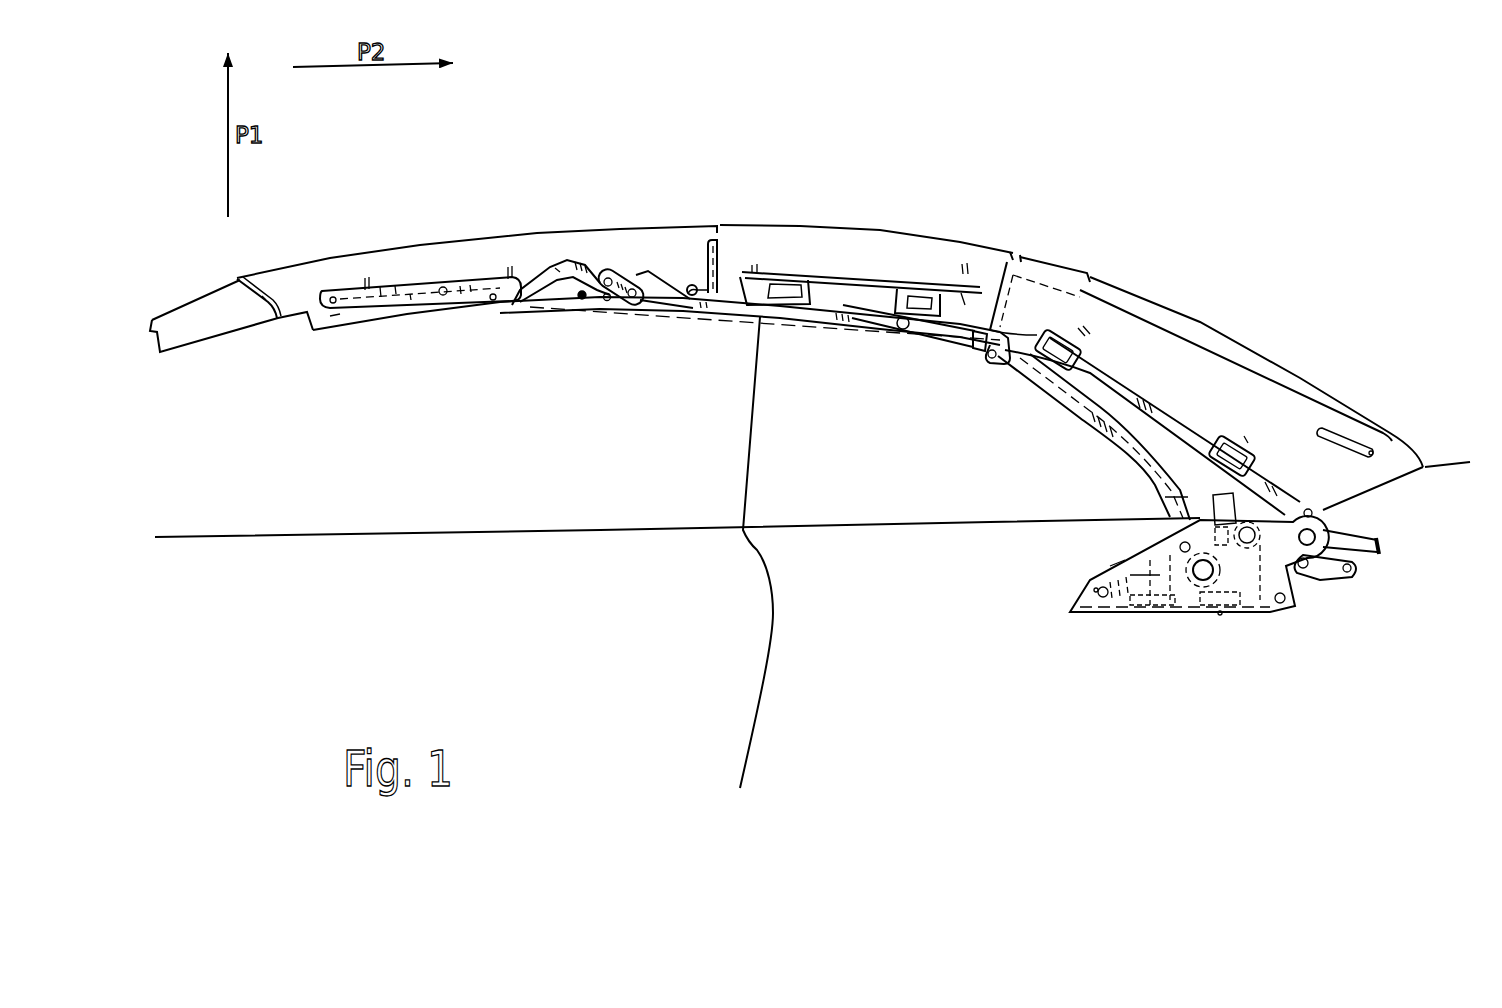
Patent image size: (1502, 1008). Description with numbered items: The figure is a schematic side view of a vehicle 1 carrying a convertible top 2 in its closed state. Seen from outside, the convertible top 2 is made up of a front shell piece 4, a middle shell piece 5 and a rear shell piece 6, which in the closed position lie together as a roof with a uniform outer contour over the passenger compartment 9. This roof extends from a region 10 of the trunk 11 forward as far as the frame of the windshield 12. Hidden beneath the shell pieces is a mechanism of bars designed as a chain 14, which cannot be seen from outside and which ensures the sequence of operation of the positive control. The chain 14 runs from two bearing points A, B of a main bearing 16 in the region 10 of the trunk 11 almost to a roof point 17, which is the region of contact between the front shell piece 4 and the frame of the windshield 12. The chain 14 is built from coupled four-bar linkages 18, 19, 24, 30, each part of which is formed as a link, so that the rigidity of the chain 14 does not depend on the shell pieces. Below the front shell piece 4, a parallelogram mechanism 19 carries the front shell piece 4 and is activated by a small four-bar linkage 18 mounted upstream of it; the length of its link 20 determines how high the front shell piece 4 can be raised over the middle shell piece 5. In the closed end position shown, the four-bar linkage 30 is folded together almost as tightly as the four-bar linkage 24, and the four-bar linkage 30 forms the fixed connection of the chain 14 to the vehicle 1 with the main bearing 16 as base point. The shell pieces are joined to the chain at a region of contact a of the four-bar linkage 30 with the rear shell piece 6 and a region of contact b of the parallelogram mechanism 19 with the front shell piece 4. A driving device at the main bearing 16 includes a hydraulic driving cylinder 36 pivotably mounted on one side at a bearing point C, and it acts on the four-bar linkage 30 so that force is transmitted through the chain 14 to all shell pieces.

The vehicle 1 is at (1223, 180).
The convertible top 2 is at (467, 177).
The front shell piece 4 is at (560, 243).
The middle shell piece 5 is at (837, 247).
The rear shell piece 6 is at (1043, 300).
The passenger compartment 9 is at (647, 489).
The region of the trunk 10 is at (1473, 433).
The trunk 11 is at (1465, 601).
The windshield 12 is at (195, 310).
The chain 14 is at (643, 333).
The main bearing 16 is at (1103, 628).
The roof point 17 is at (268, 318).
The small four-bar linkage 18 is at (620, 263).
The parallelogram mechanism 19 is at (438, 320).
The link 20 is at (410, 315).
The four-bar linkage 24 is at (837, 328).
The four-bar linkage 30 is at (1080, 418).
The hydraulic driving cylinder 36 is at (1130, 617).
The bearing point A is at (1220, 613).
The bearing point B is at (1327, 519).
The bearing point C is at (1095, 590).
The region of contact a is at (1237, 443).
The region of contact b is at (513, 278).